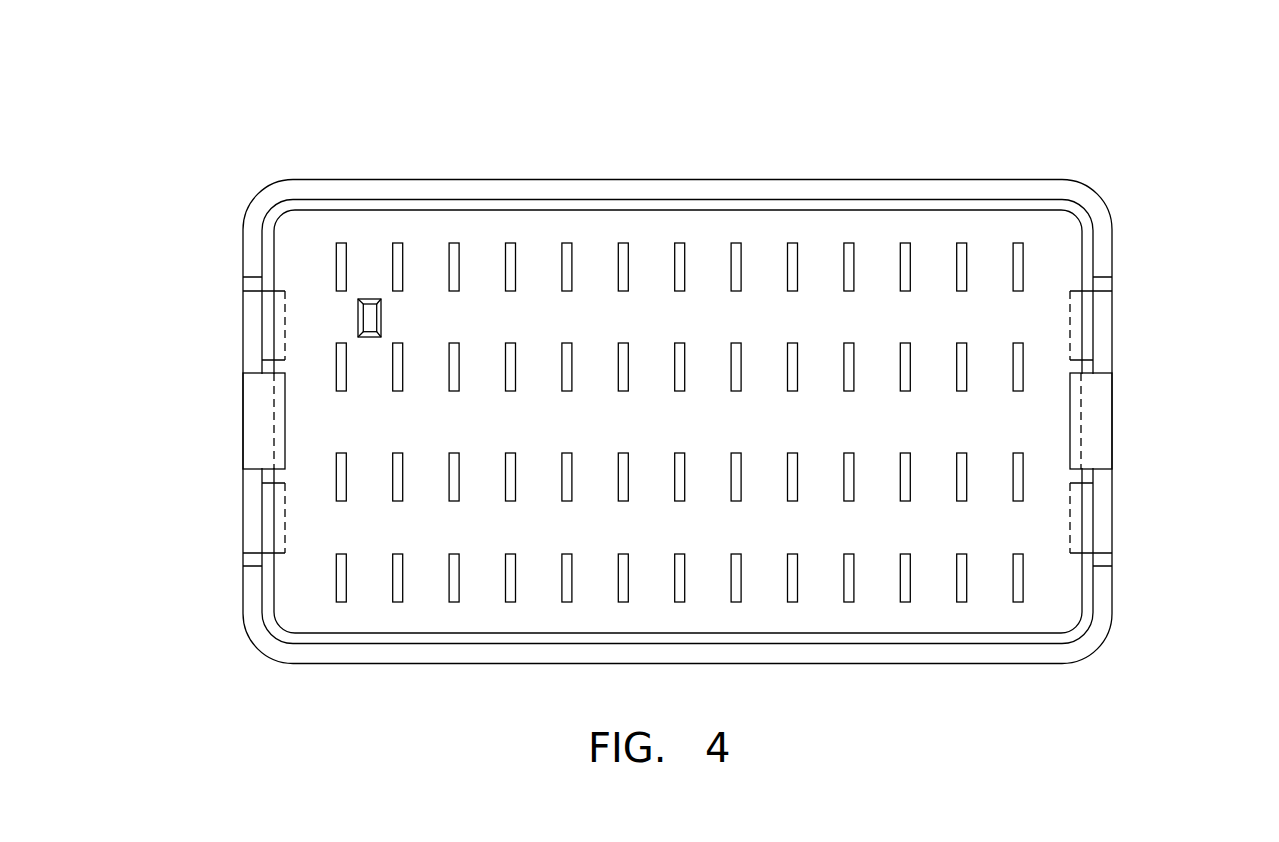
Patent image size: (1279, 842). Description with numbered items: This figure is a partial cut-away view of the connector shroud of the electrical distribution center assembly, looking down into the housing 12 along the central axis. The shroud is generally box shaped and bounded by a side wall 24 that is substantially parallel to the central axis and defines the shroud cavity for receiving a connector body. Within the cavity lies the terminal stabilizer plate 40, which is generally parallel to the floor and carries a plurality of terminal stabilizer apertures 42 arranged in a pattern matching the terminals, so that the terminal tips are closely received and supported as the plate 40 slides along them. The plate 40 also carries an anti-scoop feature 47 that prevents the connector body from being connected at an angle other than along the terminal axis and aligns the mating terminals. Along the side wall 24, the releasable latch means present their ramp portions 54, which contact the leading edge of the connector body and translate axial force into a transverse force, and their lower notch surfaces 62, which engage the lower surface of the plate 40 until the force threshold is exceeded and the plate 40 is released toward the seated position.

The housing 12 is at (482, 152).
The side wall 24 is at (252, 225).
The terminal stabilizer plate 40 is at (678, 363).
The terminal stabilizer apertures 42 is at (623, 243).
The anti-scoop feature 47 is at (373, 299).
The ramp portion 54 is at (250, 425).
The lower notch surface 62 is at (253, 330).